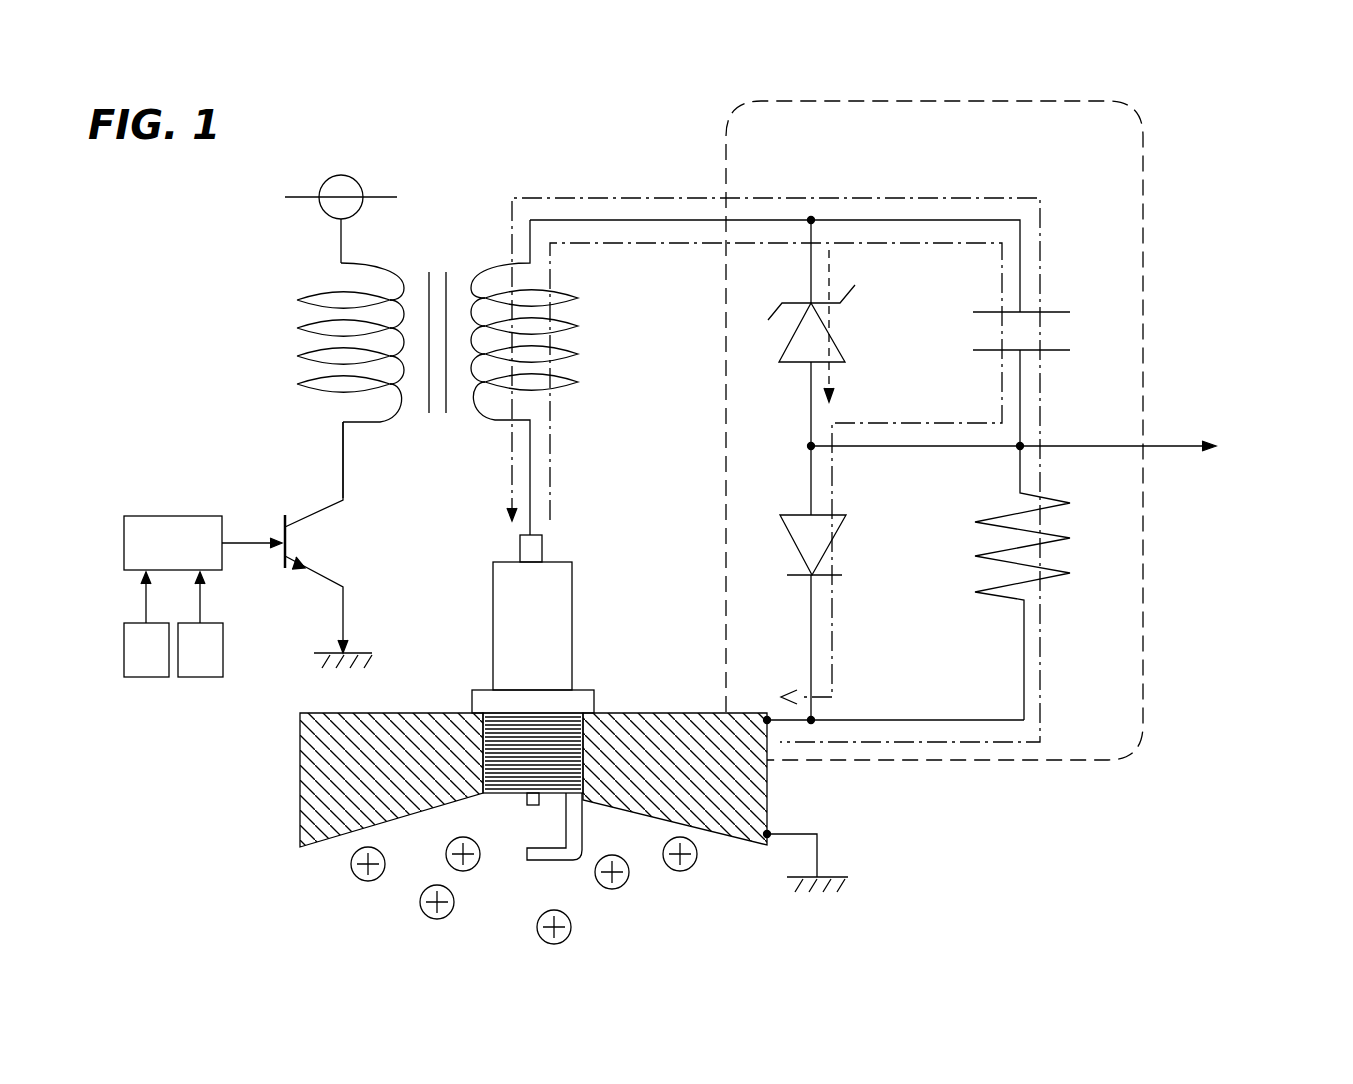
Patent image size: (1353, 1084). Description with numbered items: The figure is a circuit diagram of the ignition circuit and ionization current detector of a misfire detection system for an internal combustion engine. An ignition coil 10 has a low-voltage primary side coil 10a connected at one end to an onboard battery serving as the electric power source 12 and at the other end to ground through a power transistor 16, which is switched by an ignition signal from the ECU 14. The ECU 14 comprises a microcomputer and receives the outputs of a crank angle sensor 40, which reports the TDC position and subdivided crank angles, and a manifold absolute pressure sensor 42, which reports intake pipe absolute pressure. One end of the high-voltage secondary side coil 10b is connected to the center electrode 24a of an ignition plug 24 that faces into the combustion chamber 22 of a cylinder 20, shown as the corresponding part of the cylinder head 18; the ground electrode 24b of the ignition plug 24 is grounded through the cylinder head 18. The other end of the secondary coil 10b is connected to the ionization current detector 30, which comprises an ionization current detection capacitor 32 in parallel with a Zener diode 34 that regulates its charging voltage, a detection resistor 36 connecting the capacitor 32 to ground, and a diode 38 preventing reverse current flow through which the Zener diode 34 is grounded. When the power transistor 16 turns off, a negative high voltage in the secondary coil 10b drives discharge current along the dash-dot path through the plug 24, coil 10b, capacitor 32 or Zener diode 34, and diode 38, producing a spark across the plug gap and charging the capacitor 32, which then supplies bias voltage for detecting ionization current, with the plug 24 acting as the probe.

The ignition coil 10 is at (433, 250).
The primary side coil 10a is at (297, 300).
The secondary side coil 10b is at (576, 298).
The electric power source 12 is at (342, 176).
The ECU 14 is at (159, 515).
The power transistor 16 is at (284, 528).
The cylinder head 18 is at (675, 778).
The cylinder 20 is at (300, 713).
The combustion chamber 22 is at (485, 934).
The ignition plug 24 is at (572, 640).
The center electrode 24a is at (526, 799).
The ground electrode 24b is at (586, 834).
The ionization current detector 30 is at (911, 430).
The ionization current detection capacitor 32 is at (1060, 341).
The Zener diode 34 is at (779, 356).
The detection resistor 36 is at (1072, 502).
The diode 38 is at (780, 520).
The crank angle sensor 40 is at (134, 666).
The manifold absolute pressure sensor 42 is at (188, 666).